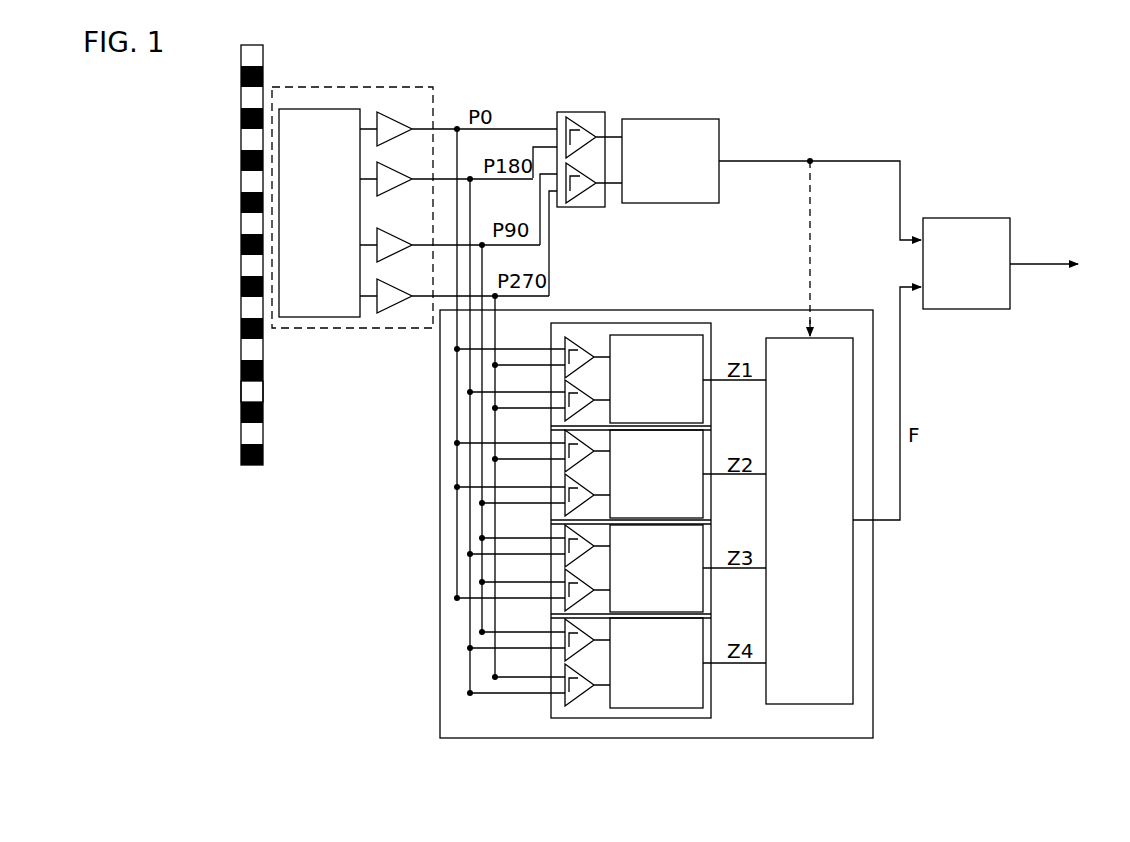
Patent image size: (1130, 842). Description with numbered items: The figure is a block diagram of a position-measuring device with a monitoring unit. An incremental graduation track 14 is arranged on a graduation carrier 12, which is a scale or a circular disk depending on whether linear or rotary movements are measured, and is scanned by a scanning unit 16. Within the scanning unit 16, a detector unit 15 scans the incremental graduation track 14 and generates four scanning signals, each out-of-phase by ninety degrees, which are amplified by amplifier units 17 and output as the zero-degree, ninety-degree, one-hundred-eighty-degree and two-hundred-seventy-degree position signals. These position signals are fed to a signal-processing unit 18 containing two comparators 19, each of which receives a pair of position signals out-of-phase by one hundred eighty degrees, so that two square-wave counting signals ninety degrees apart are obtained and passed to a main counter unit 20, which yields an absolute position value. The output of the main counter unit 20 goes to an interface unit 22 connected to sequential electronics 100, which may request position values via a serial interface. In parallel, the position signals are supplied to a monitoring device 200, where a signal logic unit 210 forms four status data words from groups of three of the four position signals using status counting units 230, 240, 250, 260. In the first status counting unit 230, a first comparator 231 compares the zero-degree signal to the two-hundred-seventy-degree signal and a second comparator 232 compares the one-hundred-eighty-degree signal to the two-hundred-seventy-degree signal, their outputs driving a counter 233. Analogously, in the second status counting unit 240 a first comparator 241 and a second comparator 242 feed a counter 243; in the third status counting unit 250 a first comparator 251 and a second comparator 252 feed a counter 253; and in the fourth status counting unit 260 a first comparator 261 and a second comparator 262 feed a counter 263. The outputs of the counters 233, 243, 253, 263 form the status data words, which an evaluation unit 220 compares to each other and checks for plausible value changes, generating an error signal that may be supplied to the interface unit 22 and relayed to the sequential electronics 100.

The graduation carrier 12 is at (247, 465).
The incremental graduation track 14 is at (251, 385).
The detector unit 15 is at (289, 308).
The scanning unit 16 is at (348, 322).
The amplifier units 17 is at (387, 302).
The signal-processing unit 18 is at (592, 112).
The comparators 19 is at (578, 115).
The main counter unit 20 is at (680, 125).
The interface unit 22 is at (962, 223).
The sequential electronics 100 is at (1068, 266).
The monitoring device 200 is at (873, 633).
The signal logic unit 210 is at (660, 720).
The evaluation unit 220 is at (815, 695).
The first status counting unit 230 is at (711, 336).
The first comparator 231 is at (562, 347).
The second comparator 232 is at (562, 390).
The counter 233 is at (699, 407).
The second status counting unit 240 is at (711, 432).
The first comparator 241 is at (562, 440).
The second comparator 242 is at (562, 485).
The counter 243 is at (699, 501).
The third status counting unit 250 is at (711, 529).
The first comparator 251 is at (562, 534).
The second comparator 252 is at (562, 579).
The counter 253 is at (699, 595).
The fourth status counting unit 260 is at (711, 622).
The first comparator 261 is at (562, 629).
The second comparator 262 is at (562, 674).
The counter 263 is at (699, 691).